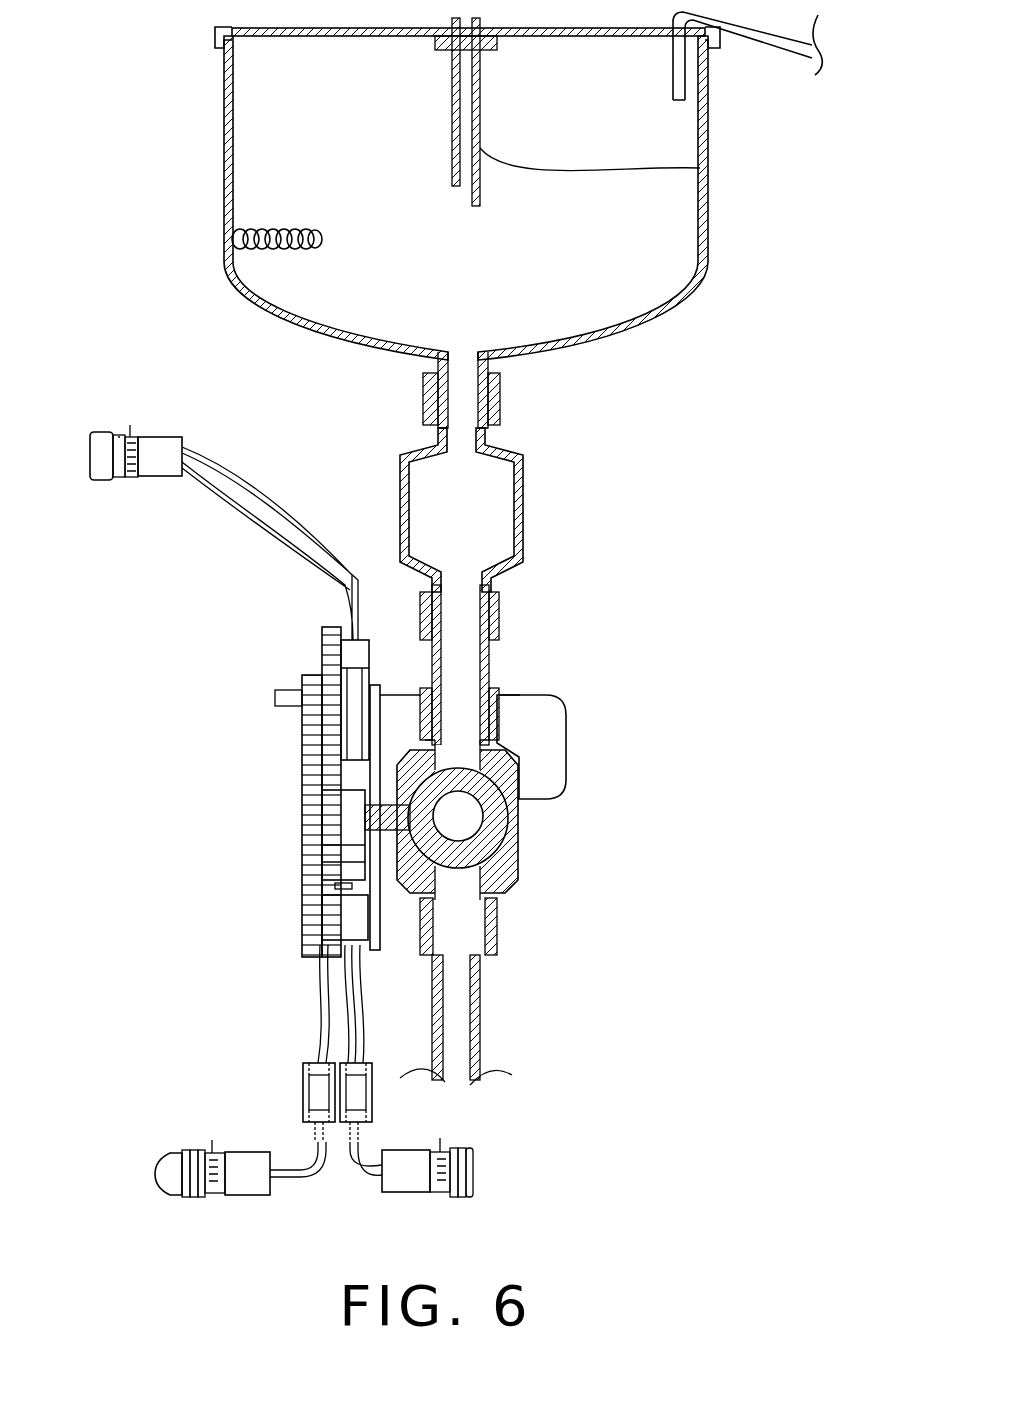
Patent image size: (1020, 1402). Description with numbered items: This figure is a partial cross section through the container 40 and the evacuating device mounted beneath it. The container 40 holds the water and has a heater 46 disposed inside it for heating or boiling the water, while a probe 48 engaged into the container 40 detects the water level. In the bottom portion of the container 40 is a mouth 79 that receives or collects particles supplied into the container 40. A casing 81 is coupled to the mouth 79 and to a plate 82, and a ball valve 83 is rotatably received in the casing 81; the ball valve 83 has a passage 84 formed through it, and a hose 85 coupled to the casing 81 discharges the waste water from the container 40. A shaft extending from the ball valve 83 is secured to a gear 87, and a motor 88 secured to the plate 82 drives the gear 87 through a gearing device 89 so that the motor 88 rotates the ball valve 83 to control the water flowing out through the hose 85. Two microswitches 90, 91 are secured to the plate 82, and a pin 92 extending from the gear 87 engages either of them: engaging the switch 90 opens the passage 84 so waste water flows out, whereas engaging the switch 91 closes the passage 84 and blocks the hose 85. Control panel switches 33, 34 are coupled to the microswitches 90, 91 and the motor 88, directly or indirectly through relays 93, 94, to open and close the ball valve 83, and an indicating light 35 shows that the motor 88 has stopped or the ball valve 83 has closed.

The container 40 is at (613, 335).
The heater 46 is at (263, 237).
The probe 48 is at (700, 168).
The mouth 79 is at (460, 368).
The switch 33 is at (165, 460).
The microswitch 90 is at (355, 715).
The gearing device 89 is at (335, 730).
The gear 87 is at (315, 818).
The pin 92 is at (345, 870).
The microswitch 91 is at (345, 918).
The motor 88 is at (541, 753).
The ball valve 83 is at (493, 810).
The passage 84 is at (455, 818).
The casing 81 is at (500, 885).
The hose 85 is at (498, 968).
The plate 82 is at (375, 948).
The relay 94 is at (320, 1085).
The relay 93 is at (355, 1092).
The indicating light 35 is at (237, 1172).
The switch 34 is at (412, 1172).